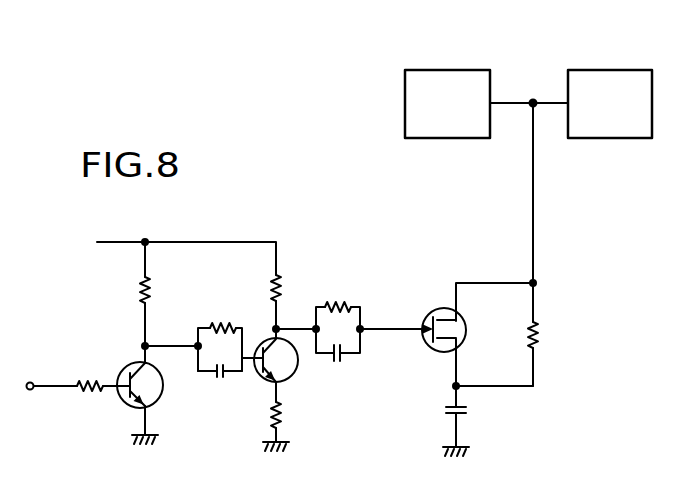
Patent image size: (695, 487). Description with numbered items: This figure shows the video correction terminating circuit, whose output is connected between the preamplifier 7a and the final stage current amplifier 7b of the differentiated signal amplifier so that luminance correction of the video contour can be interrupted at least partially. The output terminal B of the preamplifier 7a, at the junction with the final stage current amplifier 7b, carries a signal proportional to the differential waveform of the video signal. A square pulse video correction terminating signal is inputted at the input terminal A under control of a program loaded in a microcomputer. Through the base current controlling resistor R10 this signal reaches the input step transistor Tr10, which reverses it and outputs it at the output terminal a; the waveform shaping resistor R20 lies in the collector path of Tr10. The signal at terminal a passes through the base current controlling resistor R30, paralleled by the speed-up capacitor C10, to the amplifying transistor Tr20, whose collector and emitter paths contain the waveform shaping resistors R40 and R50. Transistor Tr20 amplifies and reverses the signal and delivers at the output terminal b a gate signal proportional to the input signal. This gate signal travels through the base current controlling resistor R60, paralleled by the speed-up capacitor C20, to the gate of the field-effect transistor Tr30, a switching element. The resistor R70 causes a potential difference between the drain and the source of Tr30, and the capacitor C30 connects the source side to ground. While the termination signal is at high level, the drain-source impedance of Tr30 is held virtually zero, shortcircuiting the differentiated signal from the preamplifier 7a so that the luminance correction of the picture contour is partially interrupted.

The input terminal A is at (30, 376).
The output terminal of the preamplifier B is at (532, 92).
The output terminal a is at (137, 345).
The output terminal b is at (268, 323).
The resistor for controlling base current R10 is at (87, 399).
The waveform shaping resistor R20 is at (127, 291).
The resistor for controlling base current R30 is at (220, 334).
The waveform shaping resistor R40 is at (294, 289).
The waveform shaping resistor R50 is at (297, 415).
The resistor for controlling base current R60 is at (340, 304).
The resistor R70 is at (554, 337).
The speed-up capacitor C10 is at (220, 384).
The speed-up capacitor C20 is at (345, 358).
The capacitor C30 is at (475, 415).
The input step transistor Tr10 is at (157, 390).
The amplifying transistor Tr20 is at (295, 364).
The field-effect transistor Tr30 is at (463, 330).
The preamplifier 7a is at (440, 70).
The final stage current amplifier 7b is at (580, 70).